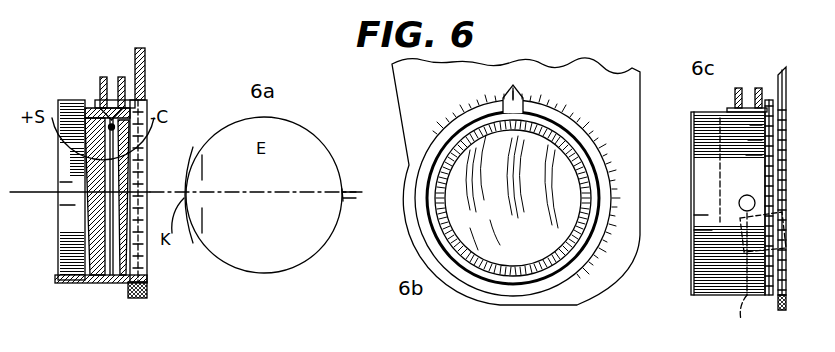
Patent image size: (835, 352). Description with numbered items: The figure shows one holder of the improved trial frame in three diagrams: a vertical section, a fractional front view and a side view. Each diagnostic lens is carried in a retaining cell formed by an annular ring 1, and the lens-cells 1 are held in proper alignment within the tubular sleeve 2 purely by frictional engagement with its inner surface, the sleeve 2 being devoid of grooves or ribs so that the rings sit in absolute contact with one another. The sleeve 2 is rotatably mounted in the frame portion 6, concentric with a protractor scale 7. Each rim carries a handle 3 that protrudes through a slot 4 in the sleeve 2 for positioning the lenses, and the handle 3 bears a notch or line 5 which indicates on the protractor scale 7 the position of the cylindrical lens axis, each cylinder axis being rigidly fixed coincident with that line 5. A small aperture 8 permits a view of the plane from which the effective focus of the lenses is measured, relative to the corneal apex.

The annular ring 1 is at (121, 283).
The tubular sleeve 2 is at (600, 200).
The handle 3 is at (121, 77).
The slot 4 is at (82, 103).
The notch or line 5 is at (513, 85).
The frame portion 6 is at (146, 70).
The protractor scale 7 is at (136, 50).
The aperture 8 is at (755, 203).